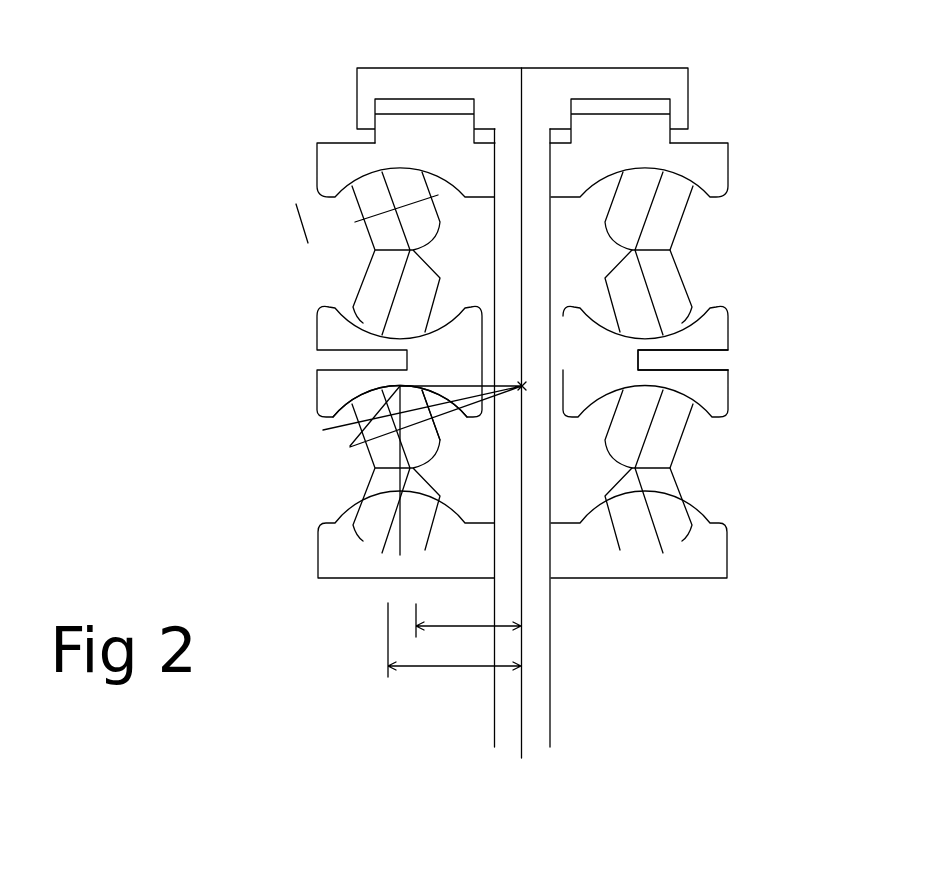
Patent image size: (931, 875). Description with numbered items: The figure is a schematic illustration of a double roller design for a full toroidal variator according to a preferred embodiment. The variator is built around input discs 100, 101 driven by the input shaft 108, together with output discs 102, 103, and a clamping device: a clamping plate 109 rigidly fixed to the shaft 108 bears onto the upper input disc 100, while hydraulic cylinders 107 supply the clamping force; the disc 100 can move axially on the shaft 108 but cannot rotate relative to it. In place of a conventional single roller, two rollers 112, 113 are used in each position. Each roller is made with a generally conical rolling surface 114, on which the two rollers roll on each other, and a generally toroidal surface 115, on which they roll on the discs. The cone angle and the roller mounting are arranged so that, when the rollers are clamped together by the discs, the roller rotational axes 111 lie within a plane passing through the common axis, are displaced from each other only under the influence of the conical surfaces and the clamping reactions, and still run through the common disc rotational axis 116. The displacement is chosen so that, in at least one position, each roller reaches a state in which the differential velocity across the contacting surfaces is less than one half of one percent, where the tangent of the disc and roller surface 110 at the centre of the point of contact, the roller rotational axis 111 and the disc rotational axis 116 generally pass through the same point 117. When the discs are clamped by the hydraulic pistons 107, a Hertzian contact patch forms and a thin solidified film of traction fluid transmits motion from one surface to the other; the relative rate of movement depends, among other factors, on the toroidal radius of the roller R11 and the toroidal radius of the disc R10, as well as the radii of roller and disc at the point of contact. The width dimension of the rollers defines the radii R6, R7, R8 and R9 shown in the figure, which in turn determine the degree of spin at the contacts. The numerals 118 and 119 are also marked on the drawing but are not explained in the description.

The input disc 100 is at (369, 142).
The input disc 101 is at (371, 541).
The output disc 102 is at (677, 408).
The output disc 103 is at (677, 333).
The hydraulic cylinders 107 is at (558, 105).
The input shaft 108 is at (587, 438).
The clamping plate 109 is at (601, 388).
The disc and roller surface 110 is at (399, 361).
The roller rotational axis 111 is at (349, 471).
The roller 112 is at (708, 208).
The roller 113 is at (708, 281).
The conical rolling surface 114 is at (708, 448).
The toroidal surface 115 is at (659, 546).
The disc rotational axis 116 is at (483, 438).
The common point 117 is at (461, 421).
The clearance 118 is at (683, 148).
The slot 119 is at (725, 363).
The radius R6 is at (257, 223).
The radius R7 is at (278, 206).
The radius R8 is at (468, 613).
The radius R9 is at (454, 658).
The toroidal radius of the disc R10 is at (347, 403).
The toroidal radius of the roller R11 is at (451, 436).